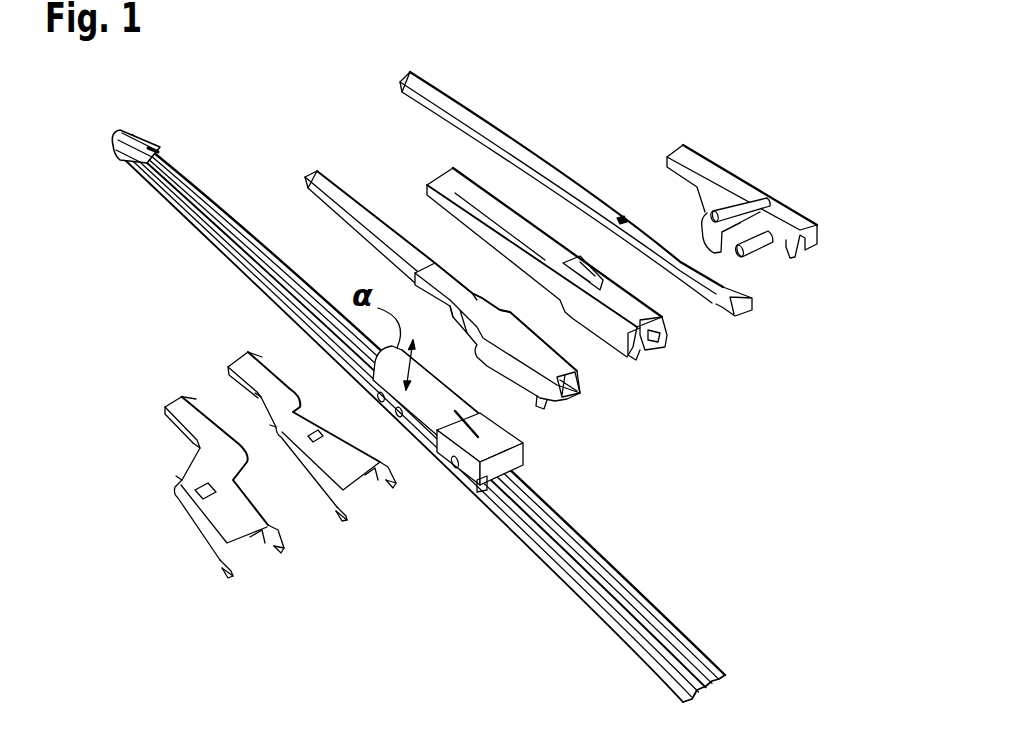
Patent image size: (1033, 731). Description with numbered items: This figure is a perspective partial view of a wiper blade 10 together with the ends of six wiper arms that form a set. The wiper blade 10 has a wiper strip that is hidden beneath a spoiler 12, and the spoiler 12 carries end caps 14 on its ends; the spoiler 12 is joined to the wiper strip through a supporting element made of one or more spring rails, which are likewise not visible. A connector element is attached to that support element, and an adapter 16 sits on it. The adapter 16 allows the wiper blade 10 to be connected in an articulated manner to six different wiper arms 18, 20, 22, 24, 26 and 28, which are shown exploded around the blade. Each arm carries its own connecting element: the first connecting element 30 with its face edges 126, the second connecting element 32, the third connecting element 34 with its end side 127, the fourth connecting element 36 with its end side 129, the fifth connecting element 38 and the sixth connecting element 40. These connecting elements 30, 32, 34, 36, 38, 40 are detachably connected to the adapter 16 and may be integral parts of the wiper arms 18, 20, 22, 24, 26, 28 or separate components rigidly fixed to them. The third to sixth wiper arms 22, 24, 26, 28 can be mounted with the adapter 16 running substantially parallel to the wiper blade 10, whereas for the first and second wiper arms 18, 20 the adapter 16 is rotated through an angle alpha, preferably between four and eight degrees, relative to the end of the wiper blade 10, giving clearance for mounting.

The wiper blade 10 is at (520, 575).
The spoiler 12 is at (205, 213).
The end caps 14 is at (140, 138).
The adapter 16 is at (535, 468).
The first wiper arm 18 is at (160, 382).
The second wiper arm 20 is at (225, 350).
The third wiper arm 22 is at (312, 168).
The fourth wiper arm 24 is at (420, 168).
The fifth wiper arm 26 is at (447, 88).
The sixth wiper arm 28 is at (677, 135).
The first connecting element 30 is at (218, 572).
The second connecting element 32 is at (337, 510).
The third connecting element 34 is at (564, 380).
The fourth connecting element 36 is at (630, 352).
The fifth connecting element 38 is at (733, 318).
The sixth connecting element 40 is at (790, 258).
The face edges 126 is at (288, 550).
The end side 127 is at (543, 392).
The end side 129 is at (664, 328).